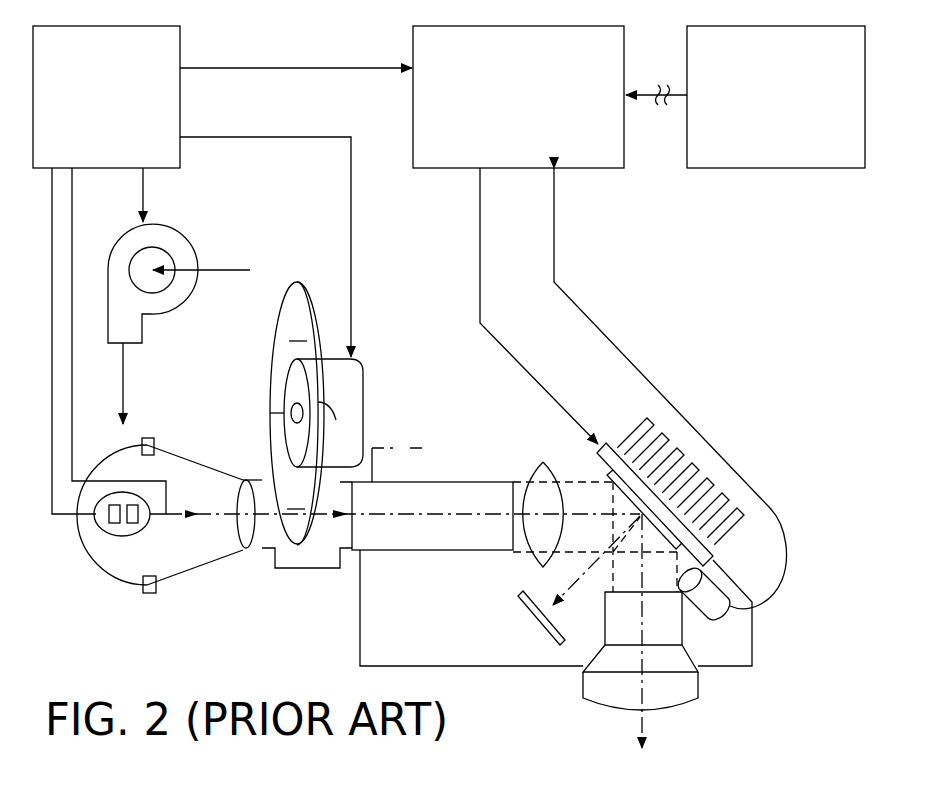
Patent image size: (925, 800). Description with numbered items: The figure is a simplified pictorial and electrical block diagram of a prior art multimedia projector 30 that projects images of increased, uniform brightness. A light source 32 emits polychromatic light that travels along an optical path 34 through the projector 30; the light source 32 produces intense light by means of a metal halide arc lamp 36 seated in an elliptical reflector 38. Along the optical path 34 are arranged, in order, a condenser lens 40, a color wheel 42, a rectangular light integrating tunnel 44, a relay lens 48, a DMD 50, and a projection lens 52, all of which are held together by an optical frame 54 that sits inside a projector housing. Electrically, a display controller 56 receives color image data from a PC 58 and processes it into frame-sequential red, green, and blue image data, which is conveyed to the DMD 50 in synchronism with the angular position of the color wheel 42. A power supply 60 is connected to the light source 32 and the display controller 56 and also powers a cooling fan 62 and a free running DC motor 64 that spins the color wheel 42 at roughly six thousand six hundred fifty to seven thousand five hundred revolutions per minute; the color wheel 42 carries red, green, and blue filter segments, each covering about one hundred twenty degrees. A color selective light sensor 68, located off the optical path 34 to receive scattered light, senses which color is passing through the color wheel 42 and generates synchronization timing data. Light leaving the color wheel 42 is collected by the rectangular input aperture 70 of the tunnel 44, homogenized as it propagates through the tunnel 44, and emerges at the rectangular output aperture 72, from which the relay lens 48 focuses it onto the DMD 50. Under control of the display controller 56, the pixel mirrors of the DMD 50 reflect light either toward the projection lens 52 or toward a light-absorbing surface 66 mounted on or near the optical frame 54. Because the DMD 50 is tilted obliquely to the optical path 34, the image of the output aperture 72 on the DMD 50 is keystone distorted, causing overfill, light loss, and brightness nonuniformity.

The multimedia projector 30 is at (770, 369).
The light source 32 is at (92, 574).
The optical path 34 is at (405, 515).
The metal halide arc lamp 36 is at (112, 525).
The elliptical reflector 38 is at (105, 567).
The condenser lens 40 is at (243, 530).
The color wheel 42 is at (257, 382).
The rectangular light integrating tunnel 44 is at (461, 492).
The relay lens 48 is at (542, 477).
The DMD 50 is at (622, 497).
The projection lens 52 is at (678, 662).
The optical frame 54 is at (206, 462).
The display controller 56 is at (413, 48).
The PC 58 is at (705, 57).
The power supply 60 is at (165, 48).
The cooling fan 62 is at (168, 237).
The free running DC motor 64 is at (343, 382).
The light-absorbing surface 66 is at (533, 617).
The color selective light sensor 68 is at (692, 573).
The rectangular input aperture 70 is at (352, 535).
The rectangular output aperture 72 is at (512, 530).